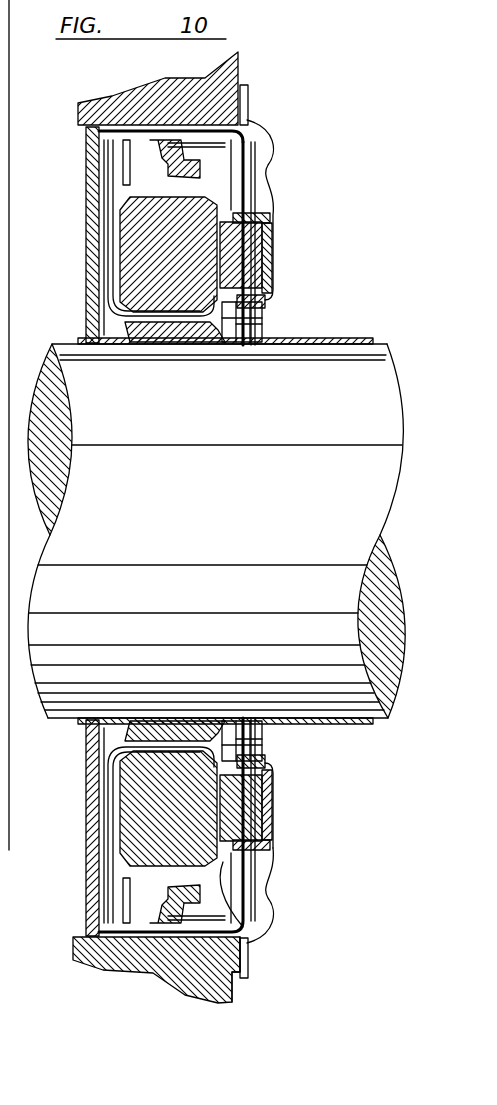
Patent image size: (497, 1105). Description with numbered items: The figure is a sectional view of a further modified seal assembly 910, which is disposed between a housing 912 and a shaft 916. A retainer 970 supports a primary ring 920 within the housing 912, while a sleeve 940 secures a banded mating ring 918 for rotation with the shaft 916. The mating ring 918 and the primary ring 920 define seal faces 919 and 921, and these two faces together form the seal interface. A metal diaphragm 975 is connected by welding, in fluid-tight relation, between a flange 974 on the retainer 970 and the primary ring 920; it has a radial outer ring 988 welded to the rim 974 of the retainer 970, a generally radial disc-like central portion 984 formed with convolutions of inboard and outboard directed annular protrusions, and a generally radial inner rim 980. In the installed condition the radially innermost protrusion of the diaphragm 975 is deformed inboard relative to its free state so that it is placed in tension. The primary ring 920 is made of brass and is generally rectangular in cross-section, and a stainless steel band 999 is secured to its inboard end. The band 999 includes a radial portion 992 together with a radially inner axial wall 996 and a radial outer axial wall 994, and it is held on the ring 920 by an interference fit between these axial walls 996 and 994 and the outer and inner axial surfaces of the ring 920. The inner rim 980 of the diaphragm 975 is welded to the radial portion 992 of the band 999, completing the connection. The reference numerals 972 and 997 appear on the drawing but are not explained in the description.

The seal assembly 910 is at (316, 229).
The housing 912 is at (230, 75).
The shaft 916 is at (345, 395).
The banded mating ring 918 is at (153, 803).
The seal face 919 is at (253, 806).
The primary ring 920 is at (266, 893).
The seal face 921 is at (213, 810).
The sleeve 940 is at (333, 737).
The retainer 970 is at (100, 942).
The seal case 972 is at (240, 100).
The flange 974 is at (237, 972).
The metal diaphragm 975 is at (277, 143).
The radially inner rim 980 is at (270, 828).
The radial disc-like central portion 984 is at (273, 862).
The radial outer ring 988 is at (250, 142).
The radial portion 992 is at (265, 258).
The radial outer axial wall 994 is at (245, 305).
The radially inner axial wall 996 is at (272, 213).
The spring 997 is at (248, 758).
The band 999 is at (268, 303).